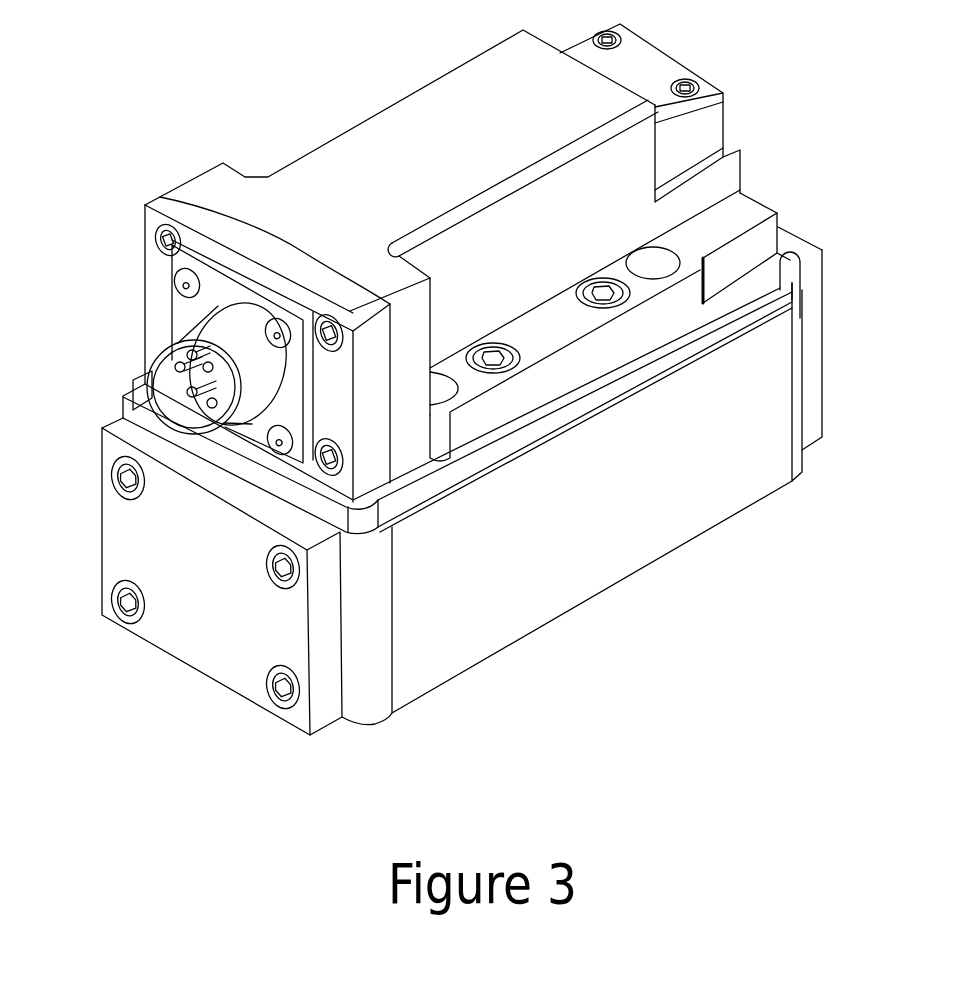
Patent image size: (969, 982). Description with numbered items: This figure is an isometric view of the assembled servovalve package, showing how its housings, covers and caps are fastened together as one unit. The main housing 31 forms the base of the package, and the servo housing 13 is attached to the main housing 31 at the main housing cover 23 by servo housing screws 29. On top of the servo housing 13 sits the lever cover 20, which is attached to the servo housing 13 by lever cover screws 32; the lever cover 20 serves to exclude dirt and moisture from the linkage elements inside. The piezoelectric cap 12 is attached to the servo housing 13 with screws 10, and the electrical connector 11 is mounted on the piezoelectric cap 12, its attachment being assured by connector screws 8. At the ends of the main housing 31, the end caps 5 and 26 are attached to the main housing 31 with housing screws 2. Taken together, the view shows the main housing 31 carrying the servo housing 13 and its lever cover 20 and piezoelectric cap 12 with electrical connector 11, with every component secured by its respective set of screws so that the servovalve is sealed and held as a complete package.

The housing screws 2 is at (118, 486).
The end cap 5 is at (195, 615).
The connector screws 8 is at (178, 285).
The screws 10 is at (166, 228).
The electrical connector 11 is at (195, 308).
The piezoelectric cap 12 is at (223, 225).
The servo housing 13 is at (745, 214).
The lever cover 20 is at (712, 140).
The main housing cover 23 is at (768, 278).
The end cap 26 is at (812, 403).
The servo housing screws 29 is at (588, 290).
The main housing 31 is at (650, 497).
The lever cover screws 32 is at (615, 30).